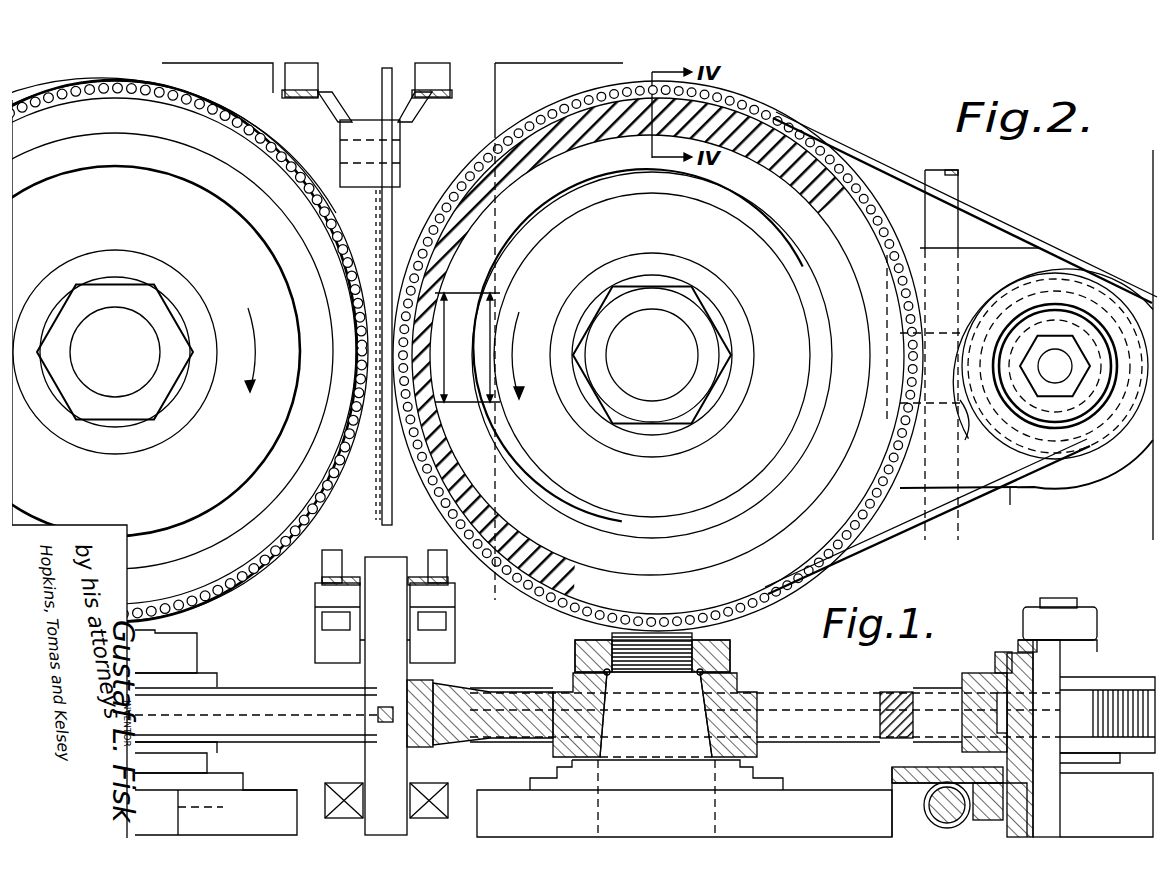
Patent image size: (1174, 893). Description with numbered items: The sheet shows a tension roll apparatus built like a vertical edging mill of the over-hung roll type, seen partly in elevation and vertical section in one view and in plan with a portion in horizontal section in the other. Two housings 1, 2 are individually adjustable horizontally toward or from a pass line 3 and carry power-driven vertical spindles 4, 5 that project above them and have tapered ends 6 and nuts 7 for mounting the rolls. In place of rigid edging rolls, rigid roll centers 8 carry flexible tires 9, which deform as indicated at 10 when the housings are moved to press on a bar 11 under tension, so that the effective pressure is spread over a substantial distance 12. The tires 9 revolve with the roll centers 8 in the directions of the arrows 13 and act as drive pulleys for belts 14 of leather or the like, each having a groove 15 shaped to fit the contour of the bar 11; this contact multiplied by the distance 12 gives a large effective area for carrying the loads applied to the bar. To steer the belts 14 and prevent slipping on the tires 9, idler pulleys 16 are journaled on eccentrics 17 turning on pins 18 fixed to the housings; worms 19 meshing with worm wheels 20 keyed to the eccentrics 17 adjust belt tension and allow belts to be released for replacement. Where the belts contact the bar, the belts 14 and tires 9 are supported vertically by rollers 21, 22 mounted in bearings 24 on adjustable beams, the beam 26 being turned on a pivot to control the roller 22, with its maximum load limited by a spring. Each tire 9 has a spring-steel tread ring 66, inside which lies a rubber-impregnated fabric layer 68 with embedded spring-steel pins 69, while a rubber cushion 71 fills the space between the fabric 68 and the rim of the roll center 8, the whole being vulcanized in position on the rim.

In FIG. 1, the housing 1 is at (295, 792).
In FIG. 1, the housing 2 is at (485, 792).
In FIG. 2, the pass line 3 is at (393, 518).
In FIG. 1, the spindle 4 is at (216, 812).
In FIG. 1, the spindle 5 is at (745, 806).
In FIG. 1, the tapered end 6 is at (705, 720).
In FIG. 2, the nut 7 is at (168, 332).
In FIG. 1, the nut 7 is at (185, 655).
In FIG. 2, the roll center 8 is at (207, 548).
In FIG. 1, the roll center 8 is at (262, 690).
In FIG. 2, the flexible tire 9 is at (42, 122).
In FIG. 1, the flexible tire 9 is at (890, 690).
In FIG. 2, the deformed portion of tire 10 is at (350, 330).
In FIG. 1, the deformed portion of tire 10 is at (345, 688).
In FIG. 2, the bar 11 is at (377, 497).
In FIG. 2, the distance 12 is at (468, 331).
In FIG. 2, the arrow 13 is at (397, 353).
In FIG. 2, the belt 14 is at (212, 101).
In FIG. 1, the belt 14 is at (300, 730).
In FIG. 2, the groove 15 is at (835, 152).
In FIG. 1, the groove 15 is at (255, 716).
In FIG. 2, the idler pulley 16 is at (1022, 270).
In FIG. 1, the idler pulley 16 is at (978, 678).
In FIG. 1, the eccentric 17 is at (1015, 655).
In FIG. 1, the pin 18 is at (1048, 770).
In FIG. 2, the worm 19 is at (985, 432).
In FIG. 1, the worm 19 is at (945, 790).
In FIG. 2, the worm wheel 20 is at (1006, 509).
In FIG. 1, the worm wheel 20 is at (990, 805).
In FIG. 1, the roller 21 is at (395, 762).
In FIG. 1, the roller 22 is at (365, 640).
In FIG. 1, the bearing 24 is at (452, 591).
In FIG. 1, the adjustable beam 26 is at (320, 567).
In FIG. 2, the tread ring 66 is at (280, 138).
In FIG. 2, the fabric layer 68 is at (588, 612).
In FIG. 2, the pin 69 is at (358, 397).
In FIG. 2, the rubber cushion 71 is at (548, 567).